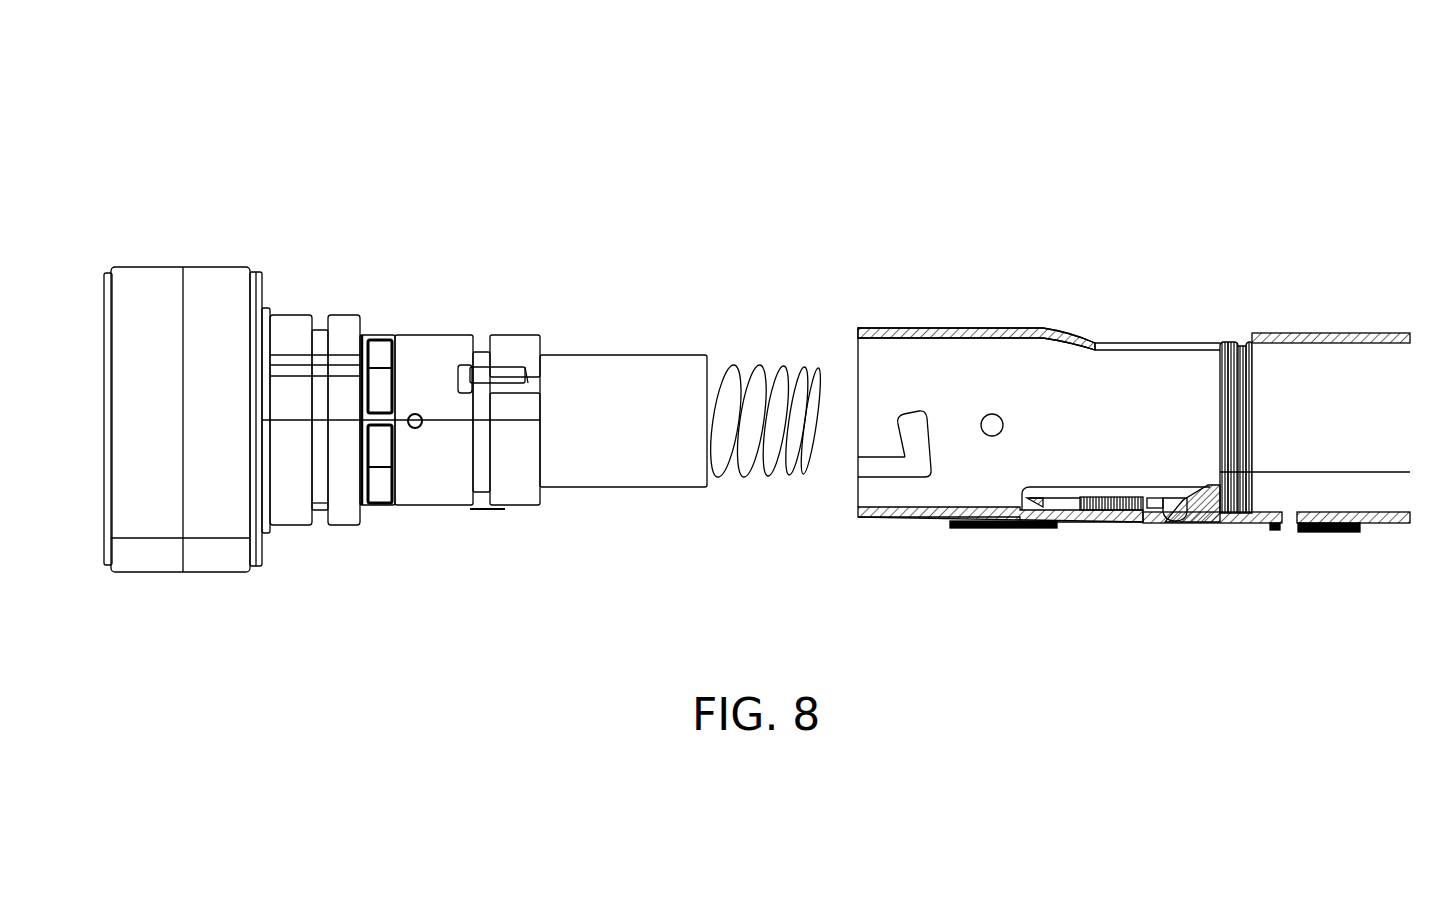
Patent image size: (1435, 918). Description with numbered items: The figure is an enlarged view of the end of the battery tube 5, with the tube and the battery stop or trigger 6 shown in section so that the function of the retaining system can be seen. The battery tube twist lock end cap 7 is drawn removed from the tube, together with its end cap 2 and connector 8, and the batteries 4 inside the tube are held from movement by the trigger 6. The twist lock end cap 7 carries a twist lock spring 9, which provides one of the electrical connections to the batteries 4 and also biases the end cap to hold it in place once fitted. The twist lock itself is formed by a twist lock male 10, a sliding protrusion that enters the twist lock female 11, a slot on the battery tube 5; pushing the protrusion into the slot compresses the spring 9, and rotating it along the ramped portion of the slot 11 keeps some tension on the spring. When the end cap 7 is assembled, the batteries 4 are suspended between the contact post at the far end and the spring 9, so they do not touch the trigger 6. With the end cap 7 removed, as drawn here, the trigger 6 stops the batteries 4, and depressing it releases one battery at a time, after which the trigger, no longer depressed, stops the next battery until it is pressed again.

The end cap 2 is at (172, 557).
The batteries 4 is at (1270, 362).
The battery tube 5 is at (1048, 336).
The battery stop or trigger 6 is at (1203, 522).
The battery tube twist lock end cap 7 is at (425, 242).
The connector 8 is at (485, 374).
The twist lock spring 9 is at (768, 373).
The twist lock male 10 is at (419, 430).
The twist lock female 11 is at (906, 415).